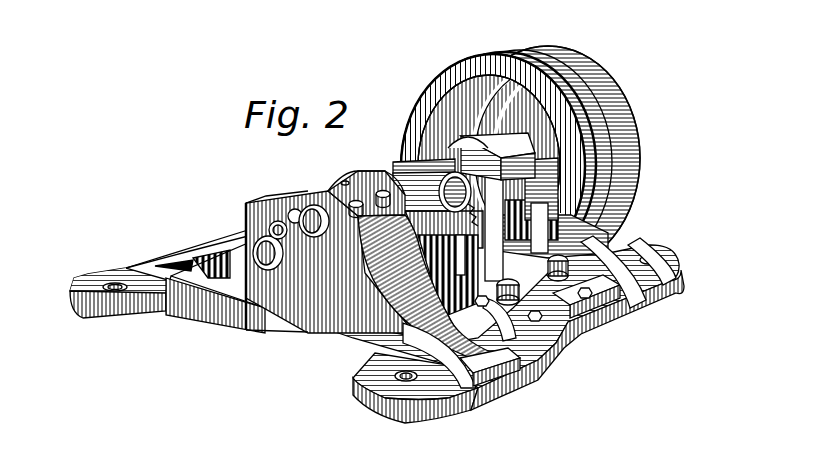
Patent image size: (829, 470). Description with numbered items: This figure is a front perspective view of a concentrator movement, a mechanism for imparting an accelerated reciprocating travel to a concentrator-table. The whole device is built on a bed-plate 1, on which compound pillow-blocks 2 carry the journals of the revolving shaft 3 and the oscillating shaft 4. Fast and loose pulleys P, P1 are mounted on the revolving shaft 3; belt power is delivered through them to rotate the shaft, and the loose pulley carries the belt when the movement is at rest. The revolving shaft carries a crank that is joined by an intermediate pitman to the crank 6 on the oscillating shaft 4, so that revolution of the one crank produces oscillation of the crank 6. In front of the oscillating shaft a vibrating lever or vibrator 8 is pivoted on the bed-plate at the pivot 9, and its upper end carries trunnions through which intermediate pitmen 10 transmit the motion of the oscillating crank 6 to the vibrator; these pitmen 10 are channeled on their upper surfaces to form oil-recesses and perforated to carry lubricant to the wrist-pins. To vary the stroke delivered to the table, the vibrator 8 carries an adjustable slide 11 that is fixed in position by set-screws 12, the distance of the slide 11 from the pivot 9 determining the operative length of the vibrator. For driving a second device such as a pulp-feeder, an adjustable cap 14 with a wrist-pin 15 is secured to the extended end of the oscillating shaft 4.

The bed-plate 1 is at (178, 244).
The compound pillow-blocks 2 is at (302, 278).
The revolving shaft 3 is at (240, 236).
The oscillating shaft 4 is at (314, 194).
The crank 6 is at (403, 166).
The vibrating lever 8 is at (487, 147).
The pivot of the vibrator 9 is at (493, 312).
The pitmen 10 is at (395, 165).
The adjustable slide 11 is at (628, 138).
The set-screws 12 is at (466, 200).
The adjustable cap 14 is at (284, 202).
The wrist-pin 15 is at (264, 214).
The fast pulley P is at (589, 89).
The loose pulley P1 is at (577, 120).